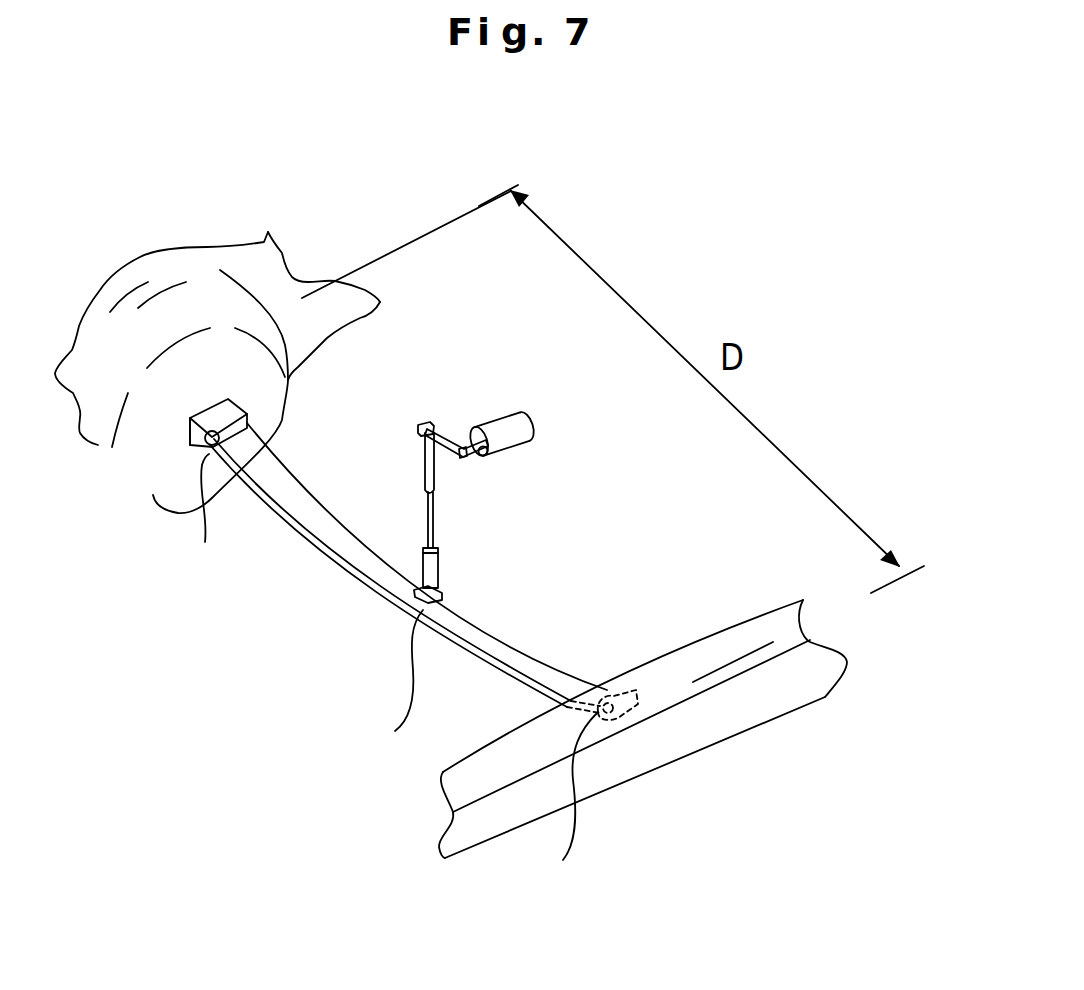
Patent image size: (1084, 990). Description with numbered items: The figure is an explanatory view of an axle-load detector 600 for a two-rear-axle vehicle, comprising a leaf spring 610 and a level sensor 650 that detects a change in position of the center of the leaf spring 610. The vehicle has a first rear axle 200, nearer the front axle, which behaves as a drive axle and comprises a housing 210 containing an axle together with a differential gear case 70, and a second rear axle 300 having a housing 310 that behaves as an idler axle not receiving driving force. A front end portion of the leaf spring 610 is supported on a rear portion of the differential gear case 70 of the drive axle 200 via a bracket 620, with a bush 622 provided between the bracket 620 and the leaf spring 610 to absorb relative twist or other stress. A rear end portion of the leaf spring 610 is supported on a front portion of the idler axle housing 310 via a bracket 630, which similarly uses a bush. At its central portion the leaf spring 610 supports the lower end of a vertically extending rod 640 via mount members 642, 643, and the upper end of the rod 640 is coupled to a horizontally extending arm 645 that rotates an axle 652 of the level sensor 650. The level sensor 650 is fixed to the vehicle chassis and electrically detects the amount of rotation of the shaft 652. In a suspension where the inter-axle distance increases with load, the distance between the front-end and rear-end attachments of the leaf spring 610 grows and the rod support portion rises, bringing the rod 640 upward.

The first rear axle 200 is at (222, 214).
The housing 210 is at (283, 288).
The differential gear case 70 is at (265, 377).
The second rear axle 300 is at (786, 759).
The housing 310 is at (797, 680).
The axle-load detector 600 is at (278, 572).
The leaf spring 610 is at (397, 593).
The bracket 620 is at (192, 446).
The bush 622 is at (200, 447).
The bracket 630 is at (615, 693).
The rod 640 is at (437, 517).
The mount member 642 is at (437, 570).
The mount member 643 is at (437, 593).
The arm 645 is at (431, 422).
The level sensor 650 is at (518, 422).
The axle 652 is at (487, 452).